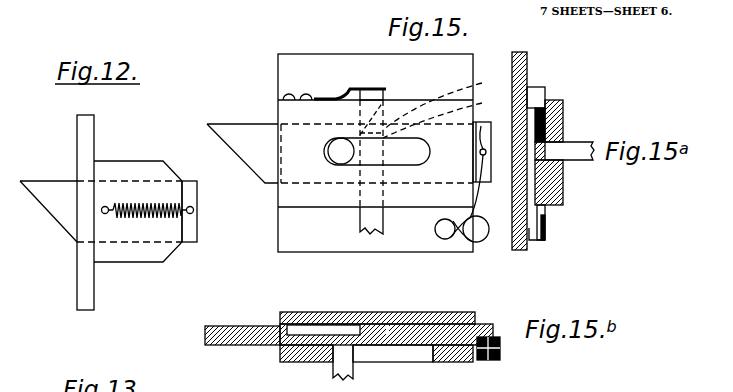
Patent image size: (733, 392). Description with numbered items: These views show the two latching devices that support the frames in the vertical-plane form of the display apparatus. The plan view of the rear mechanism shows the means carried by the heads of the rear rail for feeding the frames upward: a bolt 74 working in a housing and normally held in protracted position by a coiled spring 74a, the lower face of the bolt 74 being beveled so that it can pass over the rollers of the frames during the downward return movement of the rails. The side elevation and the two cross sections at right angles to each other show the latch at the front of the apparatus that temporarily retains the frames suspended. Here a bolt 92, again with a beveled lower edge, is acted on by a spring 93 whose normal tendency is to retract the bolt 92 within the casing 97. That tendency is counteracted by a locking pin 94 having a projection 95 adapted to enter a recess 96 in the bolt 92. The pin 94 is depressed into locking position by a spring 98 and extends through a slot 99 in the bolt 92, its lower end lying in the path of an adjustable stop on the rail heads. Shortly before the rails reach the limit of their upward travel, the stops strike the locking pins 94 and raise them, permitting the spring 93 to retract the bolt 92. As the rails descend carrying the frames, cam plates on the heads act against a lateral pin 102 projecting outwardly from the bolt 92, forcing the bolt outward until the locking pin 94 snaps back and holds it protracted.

In FIG. 12, the bolt 74 is at (70, 205).
In FIG. 12, the coiled spring 74a is at (158, 205).
In FIG. 15, the bolt 92 is at (248, 130).
In FIG. 15A, the bolt 92 is at (548, 178).
In FIG. 15B, the bolt 92 is at (243, 340).
In FIG. 15, the spring 93 is at (479, 243).
In FIG. 15B, the spring 93 is at (500, 355).
In FIG. 15, the locking pin 94 is at (362, 229).
In FIG. 15A, the locking pin 94 is at (540, 97).
In FIG. 15, the projection 95 is at (537, 108).
In FIG. 15, the recess 96 is at (444, 115).
In FIG. 15, the casing 97 is at (425, 198).
In FIG. 15B, the casing 97 is at (398, 318).
In FIG. 15, the spring 98 is at (335, 97).
In FIG. 15, the slot 99 is at (320, 178).
In FIG. 15, the lateral pin 102 is at (335, 163).
In FIG. 15A, the lateral pin 102 is at (565, 152).
In FIG. 15B, the lateral pin 102 is at (338, 368).